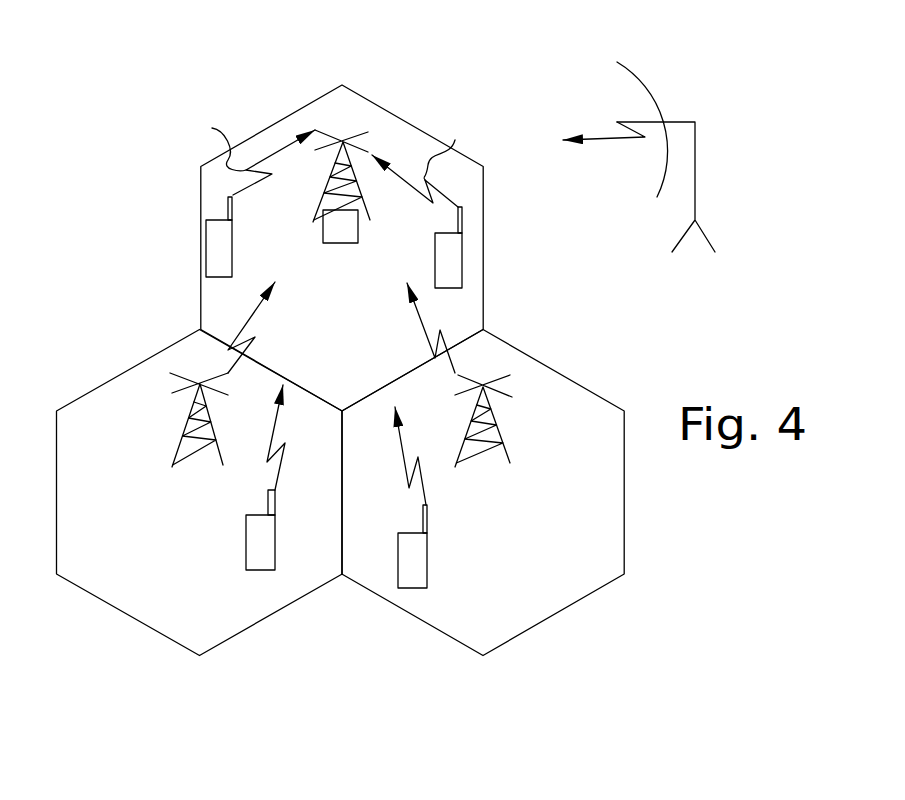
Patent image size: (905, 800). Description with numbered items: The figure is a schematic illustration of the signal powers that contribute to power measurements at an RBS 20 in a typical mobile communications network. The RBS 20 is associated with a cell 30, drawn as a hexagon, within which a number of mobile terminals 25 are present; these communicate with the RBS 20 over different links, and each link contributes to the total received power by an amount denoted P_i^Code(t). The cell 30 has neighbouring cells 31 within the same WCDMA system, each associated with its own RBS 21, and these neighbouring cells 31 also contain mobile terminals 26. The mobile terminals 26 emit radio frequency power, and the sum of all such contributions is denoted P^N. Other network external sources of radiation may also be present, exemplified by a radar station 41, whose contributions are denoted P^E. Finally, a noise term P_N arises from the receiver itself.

The RBS 20 is at (367, 132).
The RBS 21 is at (172, 462).
The mobile terminals 25 is at (217, 248).
The mobile terminals 26 is at (246, 552).
The cell 30 is at (200, 307).
The neighbouring cells 31 is at (268, 617).
The radar station 41 is at (695, 172).